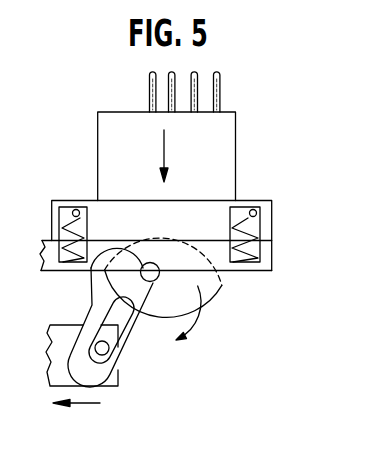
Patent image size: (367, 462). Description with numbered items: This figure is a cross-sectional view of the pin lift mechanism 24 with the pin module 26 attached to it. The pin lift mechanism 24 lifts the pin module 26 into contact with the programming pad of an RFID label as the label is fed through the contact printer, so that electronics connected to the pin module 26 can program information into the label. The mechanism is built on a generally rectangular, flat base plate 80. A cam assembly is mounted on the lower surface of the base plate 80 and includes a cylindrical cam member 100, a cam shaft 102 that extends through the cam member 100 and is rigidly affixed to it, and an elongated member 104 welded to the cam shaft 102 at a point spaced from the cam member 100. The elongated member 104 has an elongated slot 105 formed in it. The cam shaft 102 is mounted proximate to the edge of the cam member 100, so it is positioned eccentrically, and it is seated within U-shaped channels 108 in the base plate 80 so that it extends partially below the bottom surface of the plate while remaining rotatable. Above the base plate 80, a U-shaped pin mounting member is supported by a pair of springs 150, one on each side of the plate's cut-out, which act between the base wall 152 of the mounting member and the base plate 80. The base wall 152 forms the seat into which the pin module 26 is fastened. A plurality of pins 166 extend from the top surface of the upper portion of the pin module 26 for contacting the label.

The pin lift mechanism 24 is at (262, 284).
The pin module 26 is at (235, 157).
The base plate 80 is at (270, 257).
The cam member 100 is at (197, 340).
The cam shaft 102 is at (159, 278).
The elongated member 104 is at (125, 372).
The elongated slot 105 is at (118, 343).
The U-shaped channels 108 is at (85, 277).
The springs 150 is at (65, 207).
The base wall 152 is at (247, 204).
The pins 166 is at (219, 93).